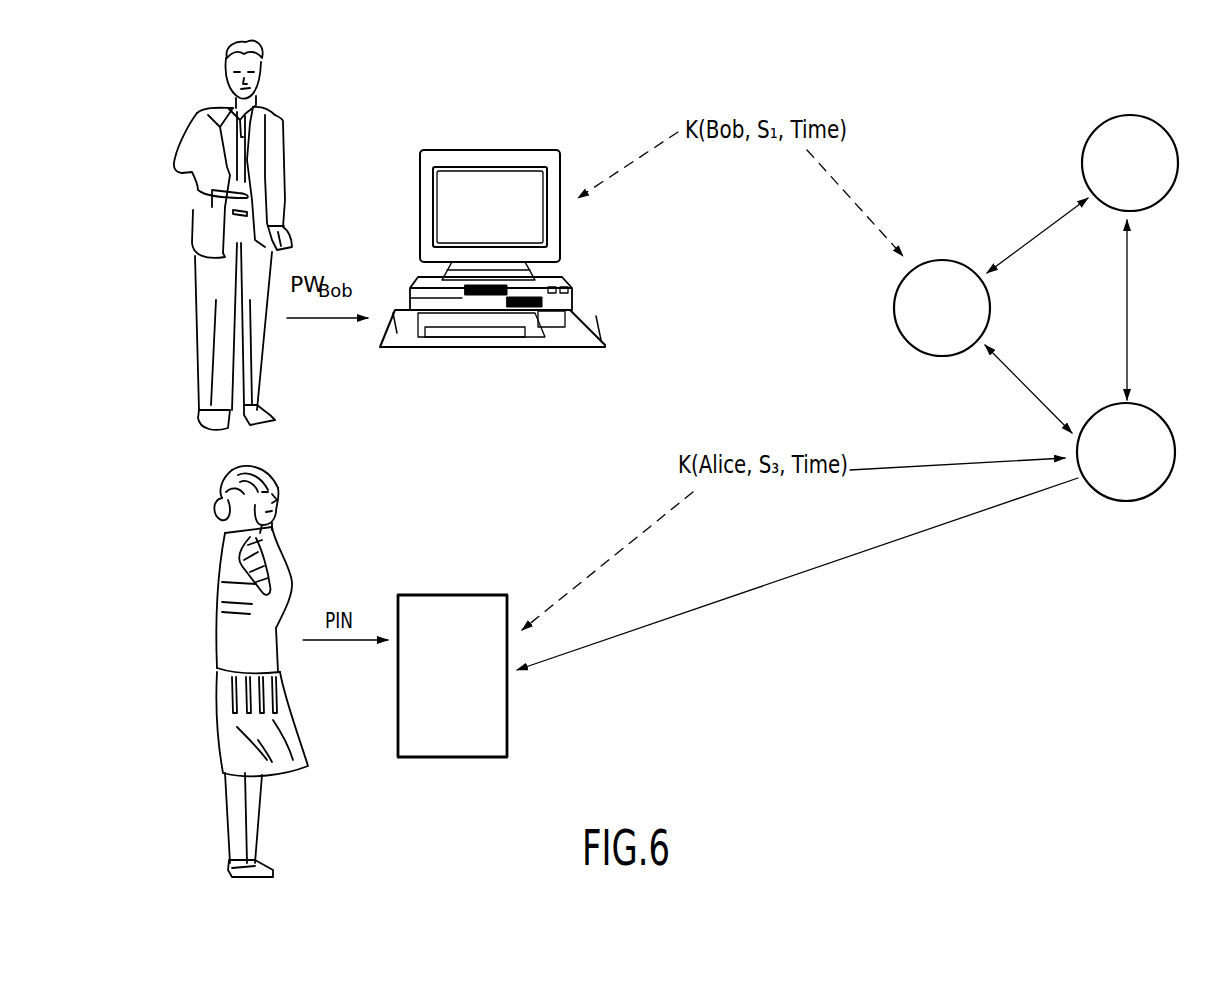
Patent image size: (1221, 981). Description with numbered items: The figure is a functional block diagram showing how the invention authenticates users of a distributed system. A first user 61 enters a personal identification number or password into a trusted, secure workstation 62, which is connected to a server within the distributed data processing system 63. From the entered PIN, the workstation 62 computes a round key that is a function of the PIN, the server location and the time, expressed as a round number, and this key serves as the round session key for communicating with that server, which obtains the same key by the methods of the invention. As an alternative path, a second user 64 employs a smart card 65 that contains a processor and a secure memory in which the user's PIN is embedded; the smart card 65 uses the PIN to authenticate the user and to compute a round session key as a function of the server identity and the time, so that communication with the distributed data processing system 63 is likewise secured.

The user 61 is at (190, 186).
The workstation 62 is at (506, 150).
The distributed data processing system 63 is at (1064, 311).
The user 64 is at (215, 607).
The smart card 65 is at (508, 717).